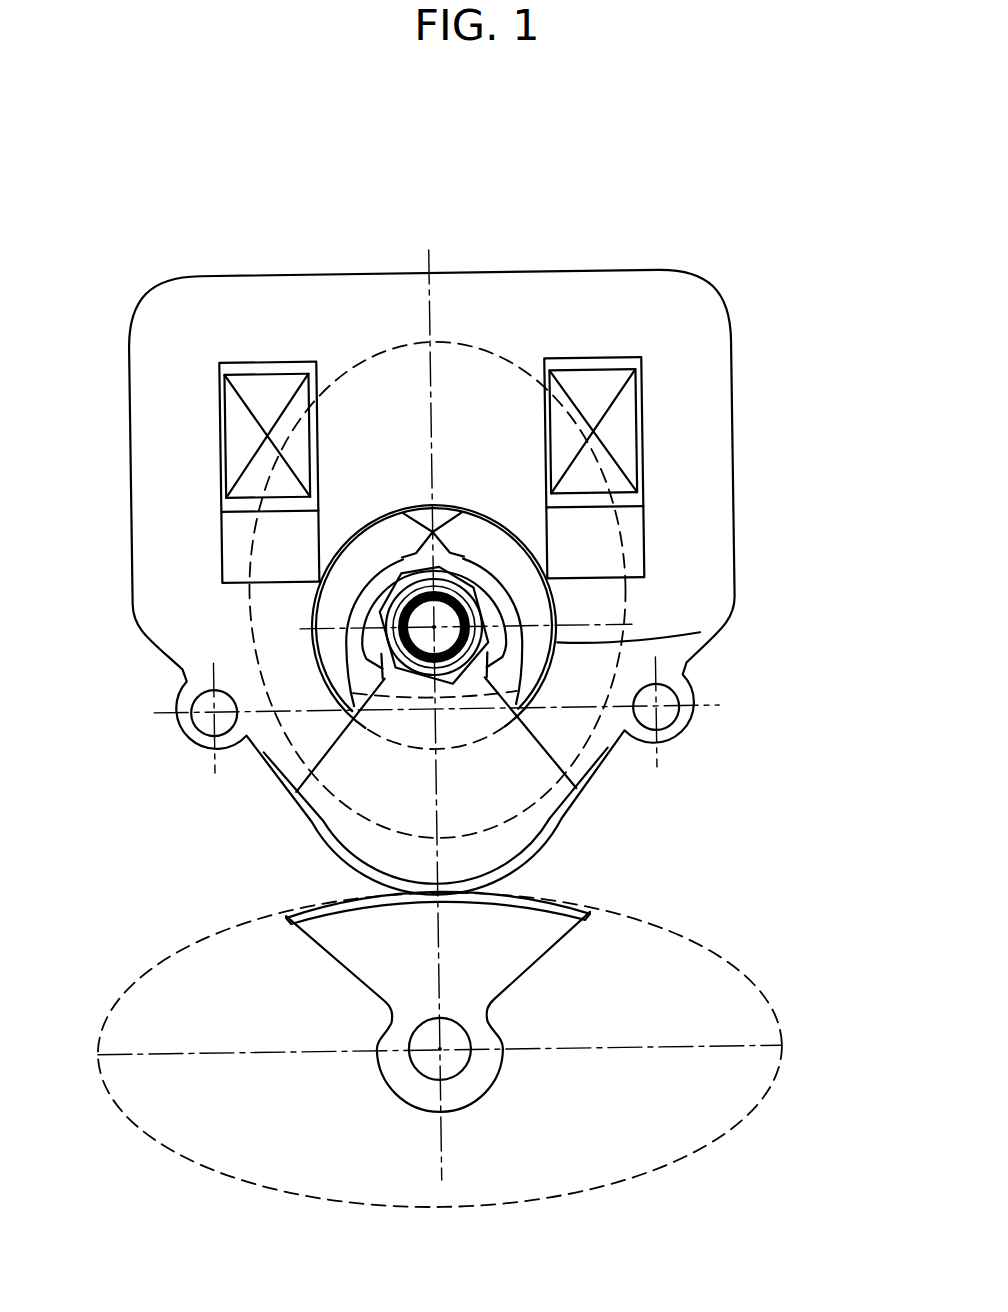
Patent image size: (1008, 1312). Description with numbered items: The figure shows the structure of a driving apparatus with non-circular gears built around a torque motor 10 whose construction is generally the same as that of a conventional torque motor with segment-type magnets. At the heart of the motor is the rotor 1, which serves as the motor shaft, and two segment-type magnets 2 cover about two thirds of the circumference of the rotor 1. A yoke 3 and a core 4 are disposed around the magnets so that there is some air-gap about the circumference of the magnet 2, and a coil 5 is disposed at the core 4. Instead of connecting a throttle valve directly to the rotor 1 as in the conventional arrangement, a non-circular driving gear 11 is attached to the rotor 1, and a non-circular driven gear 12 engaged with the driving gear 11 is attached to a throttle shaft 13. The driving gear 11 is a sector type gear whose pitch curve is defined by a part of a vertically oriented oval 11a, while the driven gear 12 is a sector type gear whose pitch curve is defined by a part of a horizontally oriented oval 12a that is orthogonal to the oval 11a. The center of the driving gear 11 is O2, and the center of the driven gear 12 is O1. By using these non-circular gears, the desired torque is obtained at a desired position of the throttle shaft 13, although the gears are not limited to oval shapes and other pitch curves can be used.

The torque motor 10 is at (296, 267).
The yoke 3 is at (587, 290).
The core 4 is at (381, 405).
The coil 5 is at (631, 441).
The rotor 1 is at (386, 571).
The segment-type magnet 2 is at (332, 630).
The center of the driving gear O2 is at (468, 612).
The vertically oriented oval 11a is at (700, 636).
The non-circular driving gear 11 is at (337, 827).
The non-circular driven gear 12 is at (350, 937).
The horizontally oriented oval 12a is at (633, 918).
The throttle shaft 13 is at (449, 1060).
The center of the driven gear O1 is at (429, 1047).